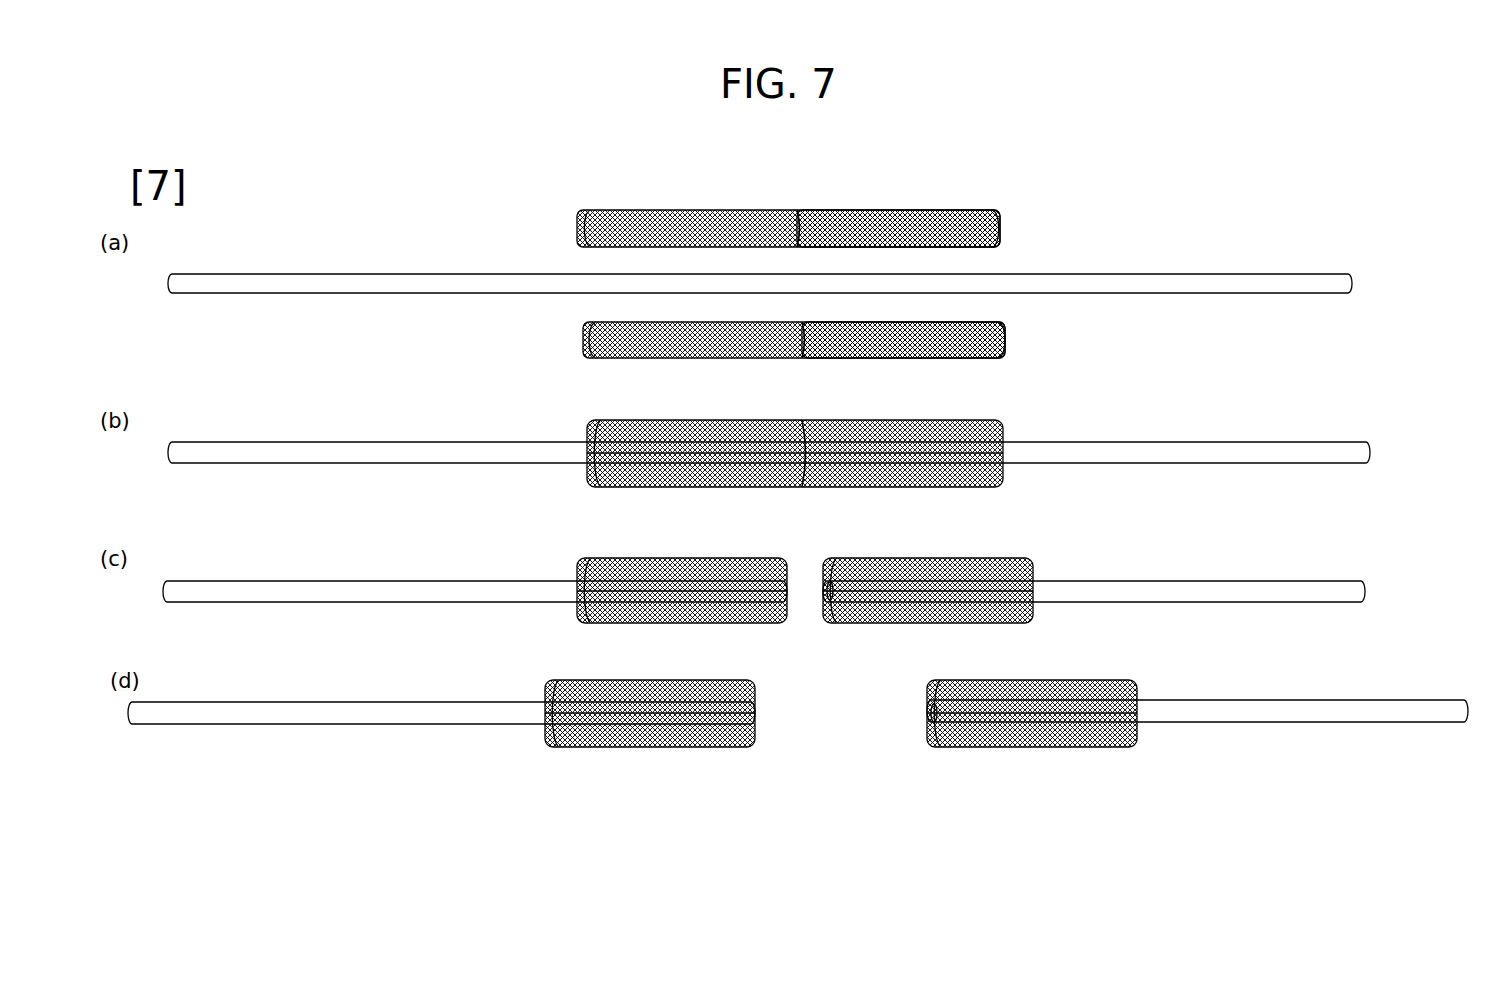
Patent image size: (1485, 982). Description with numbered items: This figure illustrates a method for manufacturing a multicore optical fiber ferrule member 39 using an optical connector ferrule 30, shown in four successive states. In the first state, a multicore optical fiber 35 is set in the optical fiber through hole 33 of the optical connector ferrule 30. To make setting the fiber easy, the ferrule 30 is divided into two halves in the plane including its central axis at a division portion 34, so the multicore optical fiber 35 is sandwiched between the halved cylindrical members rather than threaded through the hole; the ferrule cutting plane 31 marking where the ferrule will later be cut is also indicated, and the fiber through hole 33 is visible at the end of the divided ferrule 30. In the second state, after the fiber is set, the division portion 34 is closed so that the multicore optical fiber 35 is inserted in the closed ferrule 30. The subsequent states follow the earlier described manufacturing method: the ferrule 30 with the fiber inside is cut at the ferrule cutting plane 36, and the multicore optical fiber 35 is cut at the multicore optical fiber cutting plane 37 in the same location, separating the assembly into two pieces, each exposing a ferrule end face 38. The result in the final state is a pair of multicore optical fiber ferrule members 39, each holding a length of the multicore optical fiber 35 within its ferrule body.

The optical connector ferrule 30 is at (667, 210).
The ferrule cutting plane 31 is at (805, 222).
The optical fiber through hole 33 is at (578, 246).
The division portion 34 is at (988, 245).
The multicore optical fiber 35 is at (422, 276).
The ferrule cutting plane 36 is at (812, 580).
The multicore optical fiber cutting plane 37 is at (812, 602).
The ferrule end face 38 is at (926, 692).
The multicore optical fiber ferrule member 39 is at (706, 624).